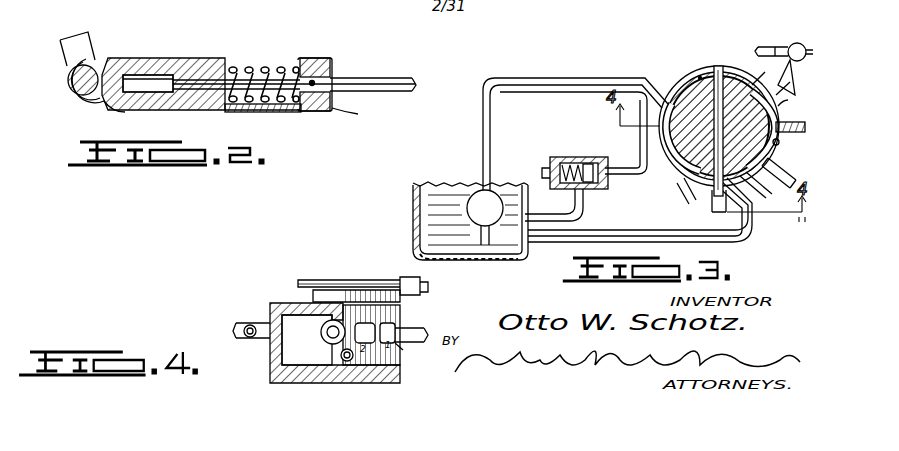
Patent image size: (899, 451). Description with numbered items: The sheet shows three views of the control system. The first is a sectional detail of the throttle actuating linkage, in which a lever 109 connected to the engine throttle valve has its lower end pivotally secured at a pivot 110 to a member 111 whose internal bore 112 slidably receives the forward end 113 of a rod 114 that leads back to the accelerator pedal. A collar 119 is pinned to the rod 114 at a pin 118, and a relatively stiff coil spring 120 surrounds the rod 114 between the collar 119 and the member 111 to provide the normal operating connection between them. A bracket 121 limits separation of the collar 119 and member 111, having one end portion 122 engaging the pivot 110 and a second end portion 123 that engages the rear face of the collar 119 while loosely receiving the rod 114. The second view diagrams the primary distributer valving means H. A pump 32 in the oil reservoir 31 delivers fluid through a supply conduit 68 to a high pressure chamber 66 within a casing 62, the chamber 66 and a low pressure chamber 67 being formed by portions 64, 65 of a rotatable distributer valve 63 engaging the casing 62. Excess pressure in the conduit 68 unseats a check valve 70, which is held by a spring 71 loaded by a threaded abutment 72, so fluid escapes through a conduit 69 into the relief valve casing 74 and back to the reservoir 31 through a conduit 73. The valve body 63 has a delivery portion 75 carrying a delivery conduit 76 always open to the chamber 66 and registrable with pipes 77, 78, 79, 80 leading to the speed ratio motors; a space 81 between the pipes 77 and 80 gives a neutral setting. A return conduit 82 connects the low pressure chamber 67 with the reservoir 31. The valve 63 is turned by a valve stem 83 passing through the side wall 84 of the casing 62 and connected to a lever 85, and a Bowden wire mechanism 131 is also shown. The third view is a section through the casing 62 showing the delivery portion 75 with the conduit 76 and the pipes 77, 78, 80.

In FIG. 2, the lever 109 is at (92, 36).
In FIG. 2, the pivot 110 is at (85, 102).
In FIG. 2, the member 111 is at (142, 58).
In FIG. 2, the internal bore 112 is at (176, 78).
In FIG. 2, the forward end of rod 113 is at (225, 68).
In FIG. 2, the rod 114 is at (355, 78).
In FIG. 2, the pin 118 is at (312, 80).
In FIG. 2, the collar 119 is at (323, 58).
In FIG. 2, the coil spring 120 is at (262, 68).
In FIG. 2, the bracket 121 is at (188, 115).
In FIG. 2, the end portion of bracket 122 is at (68, 78).
In FIG. 2, the second end portion of bracket 123 is at (364, 114).
In FIG. 3, the oil reservoir 31 is at (413, 215).
In FIG. 3, the pump 32 is at (478, 192).
In FIG. 3, the casing 62 is at (706, 70).
In FIG. 4, the casing 62 is at (270, 362).
In FIG. 3, the distributer valve 63 is at (686, 196).
In FIG. 3, the portion of valve 64 is at (665, 78).
In FIG. 3, the portion of valve 65 is at (794, 82).
In FIG. 3, the high pressure chamber 66 is at (750, 72).
In FIG. 3, the low pressure chamber 67 is at (795, 97).
In FIG. 3, the pressure fluid supply conduit 68 is at (572, 58).
In FIG. 4, the pressure fluid supply conduit 68 is at (240, 323).
In FIG. 3, the conduit 69 is at (622, 165).
In FIG. 4, the conduit 69 is at (252, 326).
In FIG. 3, the check valve 70 is at (588, 163).
In FIG. 3, the spring 71 is at (566, 163).
In FIG. 3, the threaded abutment 72 is at (550, 168).
In FIG. 3, the conduit 73 is at (588, 213).
In FIG. 3, the relief valve casing 74 is at (565, 199).
In FIG. 4, the delivery portion 75 is at (330, 338).
In FIG. 3, the pressure fluid delivery conduit 76 is at (724, 70).
In FIG. 4, the pressure fluid delivery conduit 76 is at (336, 340).
In FIG. 3, the conduit 77 is at (794, 180).
In FIG. 4, the conduit 77 is at (395, 343).
In FIG. 3, the conduit 78 is at (762, 195).
In FIG. 4, the conduit 78 is at (365, 323).
In FIG. 3, the conduit 79 is at (716, 212).
In FIG. 3, the conduit 80 is at (805, 122).
In FIG. 4, the conduit 80 is at (428, 330).
In FIG. 3, the space 81 is at (779, 142).
In FIG. 3, the return conduit 82 is at (556, 246).
In FIG. 4, the return conduit 82 is at (349, 362).
In FIG. 3, the valve stem 83 is at (803, 44).
In FIG. 4, the valve stem 83 is at (330, 300).
In FIG. 4, the side wall 84 is at (283, 305).
In FIG. 4, the lever 85 is at (400, 322).
In FIG. 3, the Bowden wire mechanism 131 is at (775, 46).
In FIG. 4, the Bowden wire mechanism 131 is at (345, 290).
In FIG. 3, the primary distributer valving means H is at (700, 78).